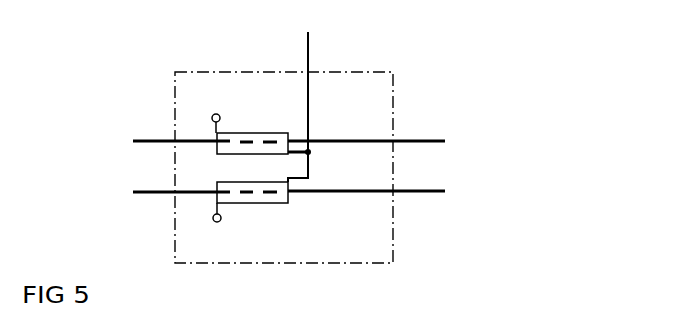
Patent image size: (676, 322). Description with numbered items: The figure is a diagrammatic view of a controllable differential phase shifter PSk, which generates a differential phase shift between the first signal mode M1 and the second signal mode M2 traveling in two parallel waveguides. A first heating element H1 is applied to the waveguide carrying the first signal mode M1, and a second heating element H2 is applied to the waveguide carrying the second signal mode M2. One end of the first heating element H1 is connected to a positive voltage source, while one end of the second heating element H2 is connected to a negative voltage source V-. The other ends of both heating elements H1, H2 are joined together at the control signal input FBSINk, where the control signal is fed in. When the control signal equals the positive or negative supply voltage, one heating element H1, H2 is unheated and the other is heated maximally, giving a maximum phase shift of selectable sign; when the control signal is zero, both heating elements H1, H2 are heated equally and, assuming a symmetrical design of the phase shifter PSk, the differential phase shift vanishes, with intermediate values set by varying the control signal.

The differential phase shifter PSk is at (395, 108).
The control signal input FBSINk is at (306, 71).
The first signal mode M1 is at (158, 153).
The second signal mode M2 is at (158, 204).
The first heating element H1 is at (263, 130).
The second heating element H2 is at (267, 204).
The negative voltage source V- is at (204, 217).